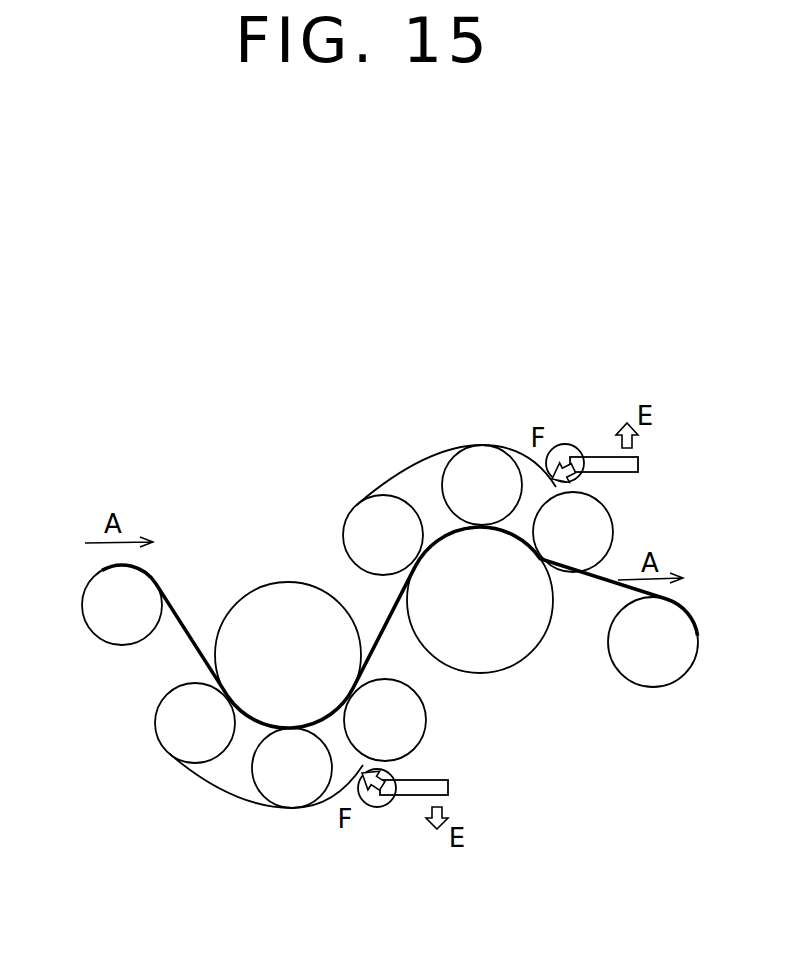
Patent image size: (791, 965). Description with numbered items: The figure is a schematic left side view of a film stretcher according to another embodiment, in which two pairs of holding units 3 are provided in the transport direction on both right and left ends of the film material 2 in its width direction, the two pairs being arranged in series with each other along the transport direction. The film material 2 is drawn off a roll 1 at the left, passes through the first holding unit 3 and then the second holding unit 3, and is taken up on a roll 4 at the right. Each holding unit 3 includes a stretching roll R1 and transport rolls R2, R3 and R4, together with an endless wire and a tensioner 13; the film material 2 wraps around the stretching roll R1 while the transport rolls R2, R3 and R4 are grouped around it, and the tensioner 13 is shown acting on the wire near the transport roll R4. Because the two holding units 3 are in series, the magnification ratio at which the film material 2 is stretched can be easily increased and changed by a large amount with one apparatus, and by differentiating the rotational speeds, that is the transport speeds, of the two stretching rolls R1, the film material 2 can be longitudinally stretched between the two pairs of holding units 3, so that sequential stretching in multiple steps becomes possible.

The unwinding roll 1 is at (91, 621).
The film material 2 is at (182, 622).
The holding unit 3 is at (495, 423).
The winding roll 4 is at (677, 672).
The tensioner 13 is at (638, 468).
The stretching roll R1 is at (384, 627).
The transport roll R2 is at (289, 629).
The transport roll R3 is at (387, 626).
The transport roll R4 is at (478, 626).